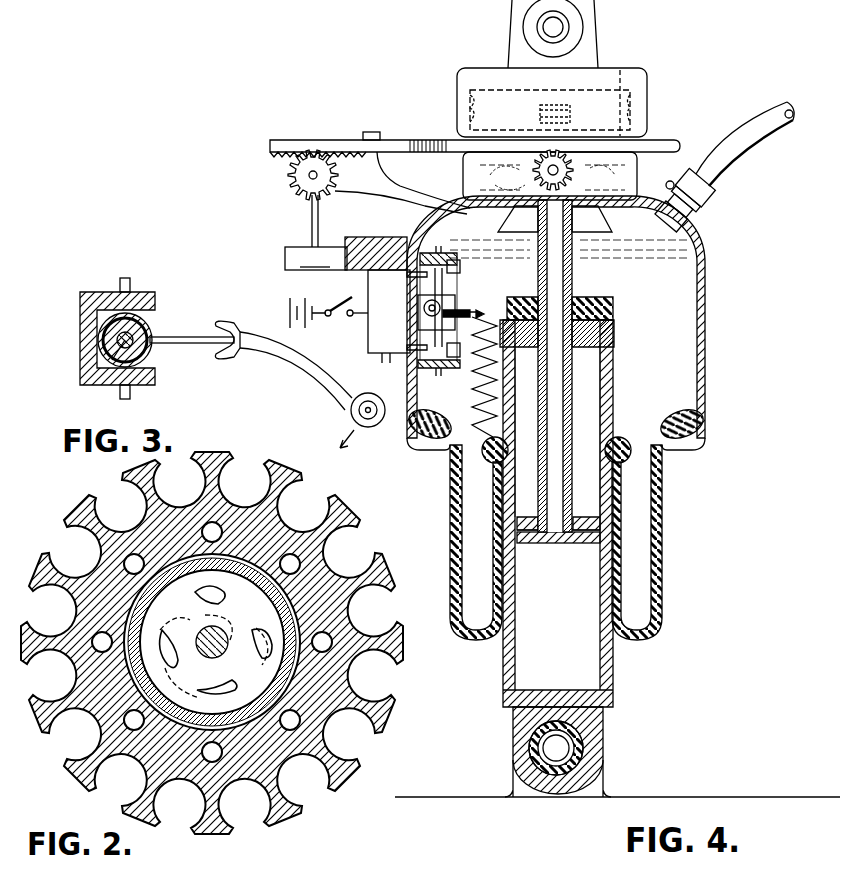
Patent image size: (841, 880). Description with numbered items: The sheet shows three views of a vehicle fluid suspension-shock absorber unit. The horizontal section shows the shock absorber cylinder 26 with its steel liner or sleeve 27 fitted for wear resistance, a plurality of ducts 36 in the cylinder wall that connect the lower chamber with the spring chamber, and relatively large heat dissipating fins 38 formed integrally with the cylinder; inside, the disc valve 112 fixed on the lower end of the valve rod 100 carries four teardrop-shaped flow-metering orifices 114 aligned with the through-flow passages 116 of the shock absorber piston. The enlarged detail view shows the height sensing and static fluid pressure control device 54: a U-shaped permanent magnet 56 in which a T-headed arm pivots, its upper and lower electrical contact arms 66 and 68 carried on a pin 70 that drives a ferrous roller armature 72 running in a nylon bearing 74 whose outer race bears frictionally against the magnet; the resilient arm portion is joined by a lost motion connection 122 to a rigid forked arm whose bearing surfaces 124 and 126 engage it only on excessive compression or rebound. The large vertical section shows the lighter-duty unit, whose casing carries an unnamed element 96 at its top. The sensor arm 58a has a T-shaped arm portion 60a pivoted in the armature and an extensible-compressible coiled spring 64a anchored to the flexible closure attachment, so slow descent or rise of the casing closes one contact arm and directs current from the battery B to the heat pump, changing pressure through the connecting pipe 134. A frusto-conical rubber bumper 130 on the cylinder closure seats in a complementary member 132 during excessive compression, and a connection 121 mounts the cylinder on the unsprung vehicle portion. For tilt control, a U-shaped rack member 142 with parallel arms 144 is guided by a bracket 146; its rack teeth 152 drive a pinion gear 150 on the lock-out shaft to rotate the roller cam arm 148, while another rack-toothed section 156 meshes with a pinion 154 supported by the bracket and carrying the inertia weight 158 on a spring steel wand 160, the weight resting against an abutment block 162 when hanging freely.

In FIG. 2, the cylinder 26 is at (238, 522).
In FIG. 4, the cylinder 26 is at (612, 397).
In FIG. 2, the liner or sleeve 27 is at (262, 705).
In FIG. 2, the ducts 36 is at (291, 556).
In FIG. 2, the heat dissipating fins 38 is at (367, 714).
In FIG. 3, the height sensing and static fluid pressure control device 54 is at (174, 300).
In FIG. 3, the U-shaped permanent magnet 56 is at (88, 364).
In FIG. 4, the U-shaped permanent magnet 56 is at (414, 316).
In FIG. 4, the static fluid spring sensor arm 58a is at (490, 286).
In FIG. 4, the T-shaped arm portion 60a is at (458, 300).
In FIG. 4, the elongated spring 64a is at (481, 372).
In FIG. 3, the upper electrical contact arm 66 is at (125, 278).
In FIG. 4, the upper electrical contact arm 66 is at (442, 262).
In FIG. 3, the lower electrical contact arm 68 is at (130, 395).
In FIG. 4, the lower electrical contact arm 68 is at (440, 352).
In FIG. 3, the pin 70 is at (150, 362).
In FIG. 4, the pin 70 is at (440, 298).
In FIG. 3, the roller armature 72 is at (132, 322).
In FIG. 4, the roller armature 72 is at (444, 322).
In FIG. 3, the nylon bearing 74 is at (112, 360).
In FIG. 4, the mounting eye 96 is at (560, 27).
In FIG. 2, the valve rod 100 is at (222, 632).
In FIG. 4, the valve rod 100 is at (560, 285).
In FIG. 2, the disc valve 112 is at (322, 566).
In FIG. 4, the disc valve 112 is at (542, 546).
In FIG. 2, the flow-metering orifices 114 is at (200, 688).
In FIG. 2, the through-flow passages 116 is at (198, 606).
In FIG. 4, the through-flow passages 116 is at (516, 534).
In FIG. 4, the connection 121 is at (566, 752).
In FIG. 3, the lost motion connection 122 is at (238, 330).
In FIG. 3, the bearing surface 124 is at (232, 322).
In FIG. 3, the bearing surface 126 is at (220, 356).
In FIG. 4, the rubber bumper 130 is at (605, 302).
In FIG. 4, the complementary shaped member 132 is at (585, 222).
In FIG. 4, the connecting pipe 134 is at (750, 115).
In FIG. 4, the rack member 142 is at (394, 142).
In FIG. 4, the parallel arms 144 is at (692, 146).
In FIG. 4, the bracket means 146 is at (368, 132).
In FIG. 4, the roller cam arm 148 is at (470, 182).
In FIG. 4, the pinion gear 150 is at (548, 172).
In FIG. 4, the rack teeth 152 is at (557, 152).
In FIG. 4, the pinion 154 is at (290, 177).
In FIG. 4, the rack-toothed section 156 is at (306, 150).
In FIG. 4, the inertia weight 158 is at (316, 258).
In FIG. 4, the resilient arm 160 is at (320, 200).
In FIG. 4, the abutment block 162 is at (395, 232).
In FIG. 4, the storage battery B is at (297, 300).